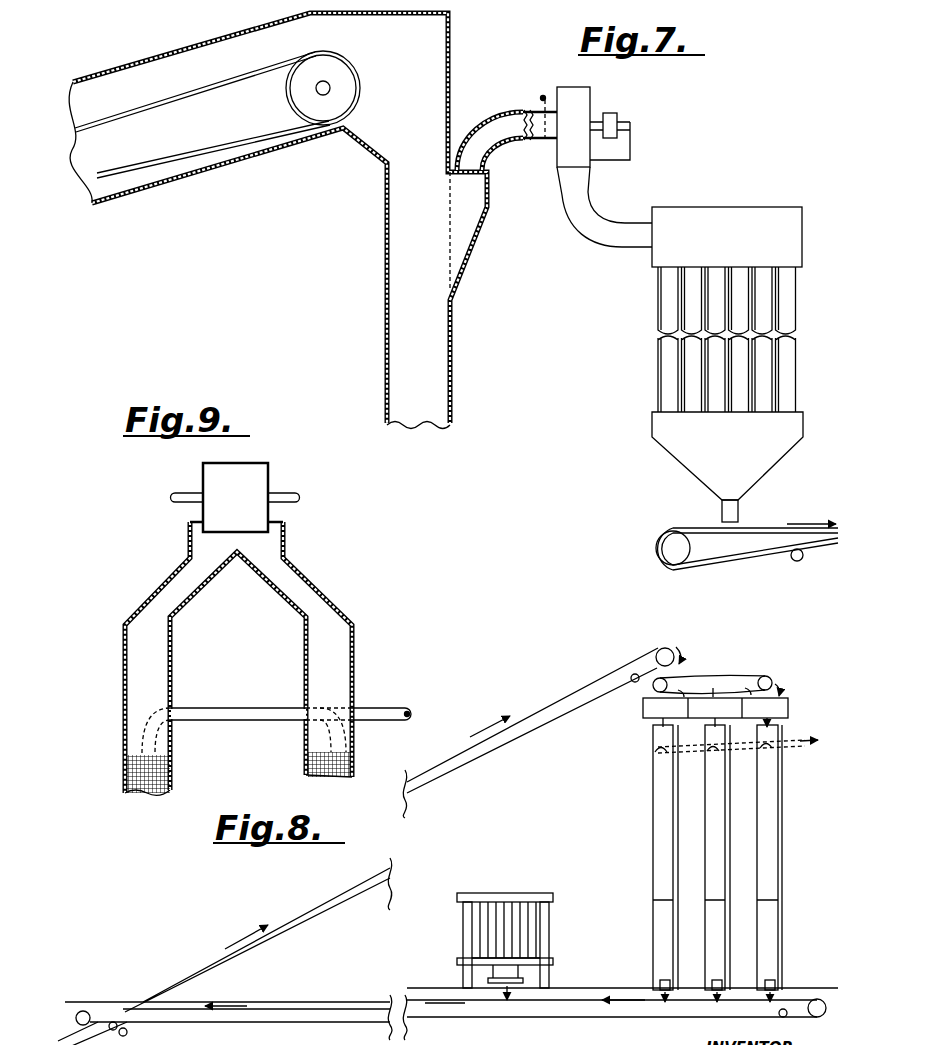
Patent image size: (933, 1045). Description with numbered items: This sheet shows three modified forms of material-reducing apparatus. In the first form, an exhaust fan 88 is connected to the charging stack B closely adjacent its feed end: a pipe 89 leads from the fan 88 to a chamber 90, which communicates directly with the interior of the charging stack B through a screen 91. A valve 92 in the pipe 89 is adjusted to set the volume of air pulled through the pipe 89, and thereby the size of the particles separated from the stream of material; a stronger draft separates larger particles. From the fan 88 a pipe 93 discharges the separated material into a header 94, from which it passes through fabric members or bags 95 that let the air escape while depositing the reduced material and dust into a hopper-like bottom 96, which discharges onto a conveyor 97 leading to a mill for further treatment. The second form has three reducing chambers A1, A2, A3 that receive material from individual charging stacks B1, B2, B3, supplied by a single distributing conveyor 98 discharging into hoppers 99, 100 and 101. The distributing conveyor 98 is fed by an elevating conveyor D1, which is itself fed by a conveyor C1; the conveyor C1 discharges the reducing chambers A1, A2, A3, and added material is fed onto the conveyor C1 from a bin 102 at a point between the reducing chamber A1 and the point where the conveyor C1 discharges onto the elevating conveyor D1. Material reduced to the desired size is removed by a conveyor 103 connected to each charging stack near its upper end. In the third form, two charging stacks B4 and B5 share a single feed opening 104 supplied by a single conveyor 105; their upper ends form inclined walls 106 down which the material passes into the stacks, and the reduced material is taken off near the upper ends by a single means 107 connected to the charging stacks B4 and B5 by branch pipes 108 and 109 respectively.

In FIG. 7, the exhaust fan 88 is at (585, 101).
In FIG. 7, the pipe 89 is at (496, 112).
In FIG. 7, the chamber 90 is at (474, 205).
In FIG. 7, the screen 91 is at (449, 232).
In FIG. 7, the valve 92 is at (543, 96).
In FIG. 7, the pipe 93 is at (596, 236).
In FIG. 7, the header 94 is at (718, 210).
In FIG. 7, the fabric members or bags 95 is at (667, 385).
In FIG. 7, the hopper-like bottom 96 is at (690, 455).
In FIG. 7, the conveyor 97 is at (735, 560).
In FIG. 7, the charging stack B is at (453, 330).
In FIG. 9, the feed opening 104 is at (270, 537).
In FIG. 9, the conveyor 105 is at (245, 470).
In FIG. 9, the inclined walls 106 is at (205, 580).
In FIG. 9, the take-off means 107 is at (390, 711).
In FIG. 9, the branch pipe 108 is at (215, 712).
In FIG. 9, the branch pipe 109 is at (335, 737).
In FIG. 9, the charging stack B4 is at (158, 676).
In FIG. 9, the charging stack B5 is at (337, 663).
In FIG. 8, the distributing conveyor 98 is at (735, 678).
In FIG. 8, the hopper 99 is at (648, 706).
In FIG. 8, the hopper 100 is at (722, 708).
In FIG. 8, the hopper 101 is at (726, 721).
In FIG. 8, the bin 102 is at (532, 929).
In FIG. 8, the conveyor 103 is at (795, 750).
In FIG. 8, the reducing chamber A1 is at (662, 940).
In FIG. 8, the reducing chamber A2 is at (715, 937).
In FIG. 8, the reducing chamber A3 is at (772, 930).
In FIG. 8, the charging stack B1 is at (662, 801).
In FIG. 8, the charging stack B2 is at (717, 812).
In FIG. 8, the charging stack B3 is at (772, 814).
In FIG. 8, the conveyor C1 is at (343, 1010).
In FIG. 8, the elevating conveyor D1 is at (298, 932).